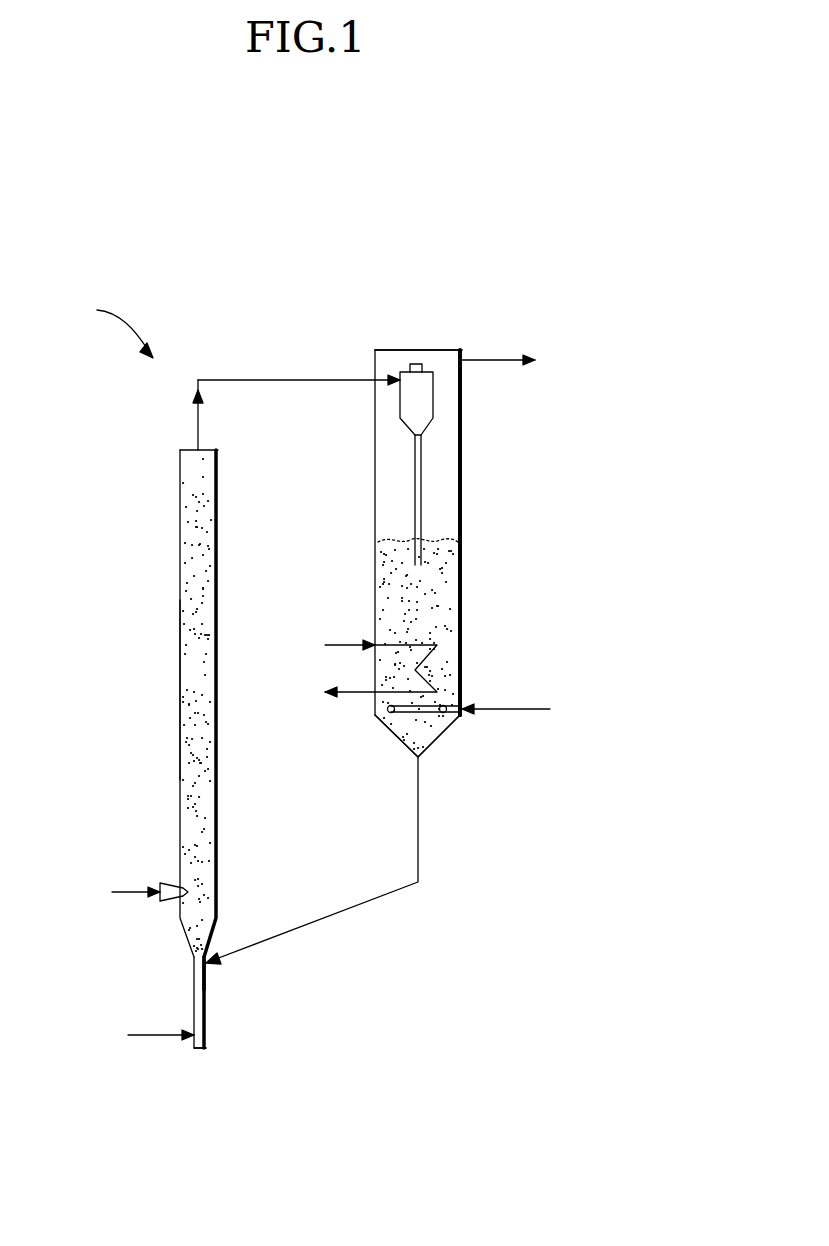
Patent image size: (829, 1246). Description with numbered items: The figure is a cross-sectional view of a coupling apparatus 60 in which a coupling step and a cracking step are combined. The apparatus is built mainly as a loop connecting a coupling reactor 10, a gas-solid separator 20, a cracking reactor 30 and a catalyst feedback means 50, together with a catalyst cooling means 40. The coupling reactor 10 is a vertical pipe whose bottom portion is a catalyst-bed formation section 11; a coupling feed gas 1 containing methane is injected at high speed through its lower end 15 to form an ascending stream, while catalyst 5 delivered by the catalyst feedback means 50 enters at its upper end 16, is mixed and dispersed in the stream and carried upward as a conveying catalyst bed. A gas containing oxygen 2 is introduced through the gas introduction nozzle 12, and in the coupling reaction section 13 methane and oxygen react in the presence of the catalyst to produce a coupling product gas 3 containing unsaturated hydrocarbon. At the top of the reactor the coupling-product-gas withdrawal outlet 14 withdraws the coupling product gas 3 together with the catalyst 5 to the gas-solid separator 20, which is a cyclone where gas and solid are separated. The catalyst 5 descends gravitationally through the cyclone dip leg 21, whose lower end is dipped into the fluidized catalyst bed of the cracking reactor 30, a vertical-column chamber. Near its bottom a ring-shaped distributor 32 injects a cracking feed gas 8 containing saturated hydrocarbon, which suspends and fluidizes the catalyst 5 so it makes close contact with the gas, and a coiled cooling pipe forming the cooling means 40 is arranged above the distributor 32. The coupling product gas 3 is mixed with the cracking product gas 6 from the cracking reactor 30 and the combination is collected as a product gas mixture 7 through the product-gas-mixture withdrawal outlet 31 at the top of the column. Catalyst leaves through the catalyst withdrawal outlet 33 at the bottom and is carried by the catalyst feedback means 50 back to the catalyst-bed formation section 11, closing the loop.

The coupling feed gas 1 is at (155, 1035).
The gas containing oxygen 2 is at (130, 897).
The coupling product gas 3 is at (302, 378).
The catalyst 5 is at (445, 562).
The cracking product gas 6 is at (383, 437).
The product gas mixture 7 is at (509, 355).
The cracking feed gas 8 is at (517, 709).
The coupling reactor 10 is at (177, 493).
The catalyst-bed formation section 11 is at (195, 1000).
The gas introduction nozzle 12 is at (168, 880).
The coupling reaction section 13 is at (180, 690).
The coupling-product-gas withdrawal outlet 14 is at (197, 445).
The lower end 15 is at (207, 1035).
The upper end 16 is at (207, 975).
The gas-solid separator 20 is at (433, 402).
The cyclone dip leg 21 is at (420, 545).
The cracking reactor 30 is at (463, 585).
The product-gas-mixture withdrawal outlet 31 is at (463, 355).
The ring-shaped distributor 32 is at (430, 715).
The catalyst withdrawal outlet 33 is at (420, 757).
The catalyst cooling means 40 is at (410, 645).
The catalyst feedback means 50 is at (355, 907).
The coupling apparatus 60 is at (105, 327).